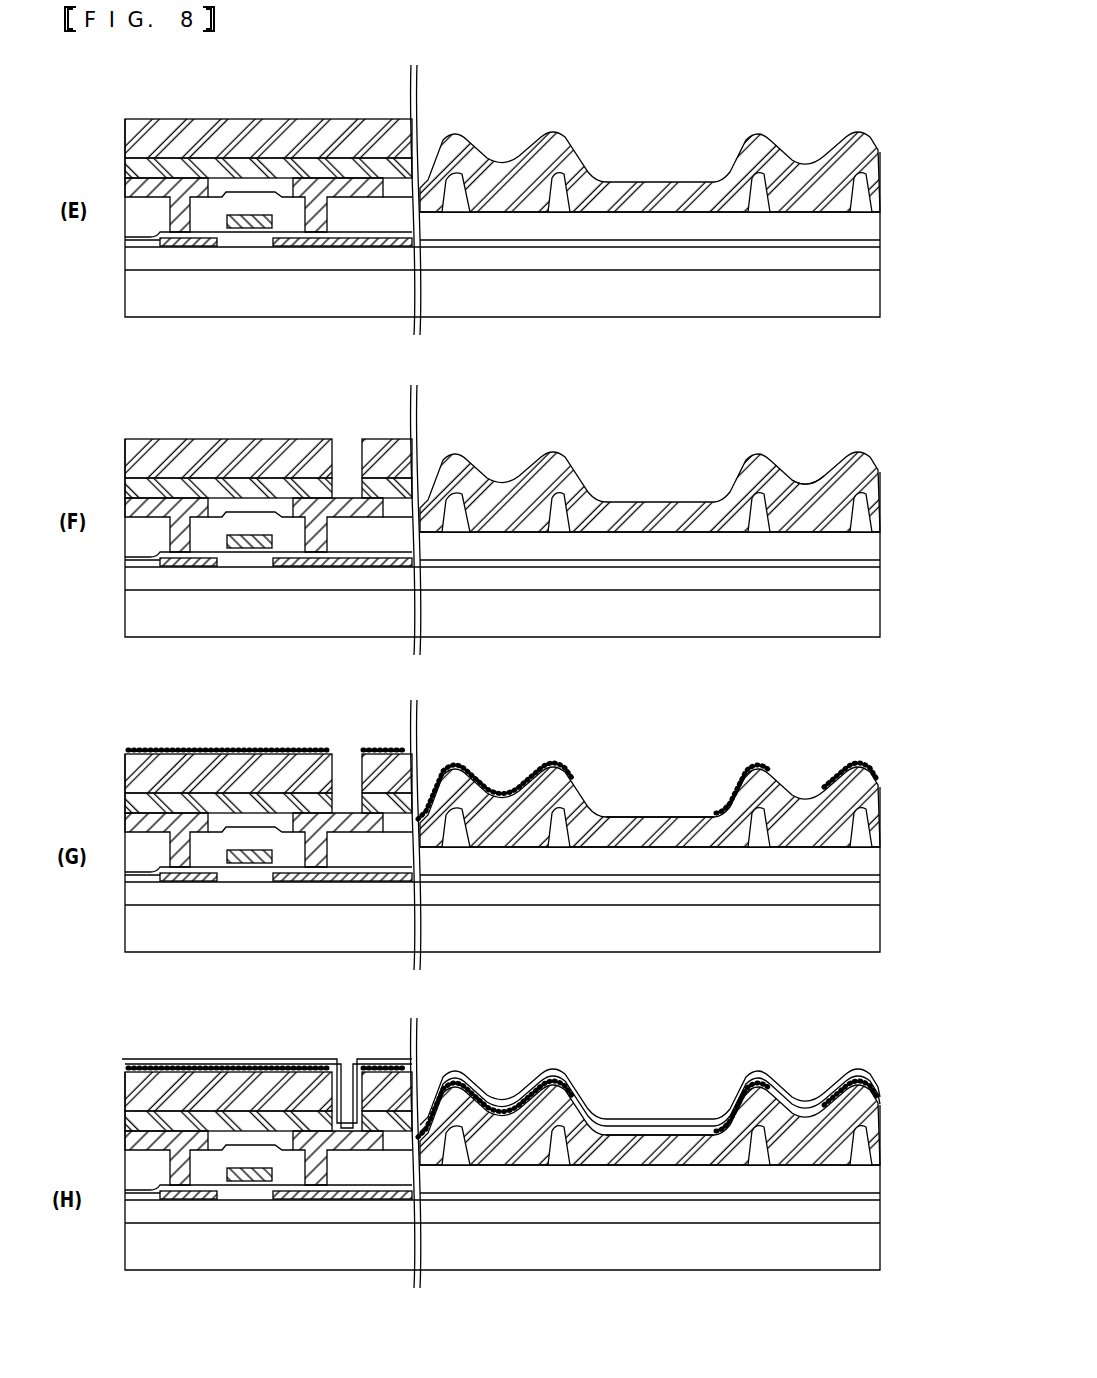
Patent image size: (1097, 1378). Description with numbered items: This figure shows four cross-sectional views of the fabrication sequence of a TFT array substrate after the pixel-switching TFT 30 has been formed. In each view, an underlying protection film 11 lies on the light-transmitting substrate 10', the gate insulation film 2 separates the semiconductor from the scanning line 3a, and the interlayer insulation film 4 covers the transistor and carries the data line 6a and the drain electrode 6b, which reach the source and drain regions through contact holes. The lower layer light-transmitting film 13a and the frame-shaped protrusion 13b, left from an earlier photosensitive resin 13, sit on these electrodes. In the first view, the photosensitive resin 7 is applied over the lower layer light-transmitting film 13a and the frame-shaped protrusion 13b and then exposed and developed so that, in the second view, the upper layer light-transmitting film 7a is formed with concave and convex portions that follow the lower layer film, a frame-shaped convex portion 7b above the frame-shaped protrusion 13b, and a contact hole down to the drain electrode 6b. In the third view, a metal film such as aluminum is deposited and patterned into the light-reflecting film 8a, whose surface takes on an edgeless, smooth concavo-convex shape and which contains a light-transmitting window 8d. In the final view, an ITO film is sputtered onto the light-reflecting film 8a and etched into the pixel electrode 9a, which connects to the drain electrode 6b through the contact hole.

The gate insulation film 2 is at (529, 704).
The scanning line 3a is at (260, 215).
The interlayer insulation film 4 is at (676, 686).
The data line 6a is at (190, 197).
The drain electrode 6b is at (373, 183).
The photosensitive resin 7 is at (355, 142).
The upper layer light-transmitting film 7a is at (806, 487).
The frame-shaped convex portion 7b is at (556, 455).
The light-reflecting film 8a is at (467, 772).
The light-transmitting window 8d is at (642, 815).
The pixel electrode 9a is at (448, 1074).
The light-transmitting substrate 10' is at (540, 676).
The underlying protection film 11 is at (537, 728).
The photosensitive resin 13 is at (307, 648).
The lower layer light-transmitting film 13a is at (462, 160).
The frame-shaped protrusion 13b is at (760, 172).
The pixel-switching TFT 30 is at (268, 750).